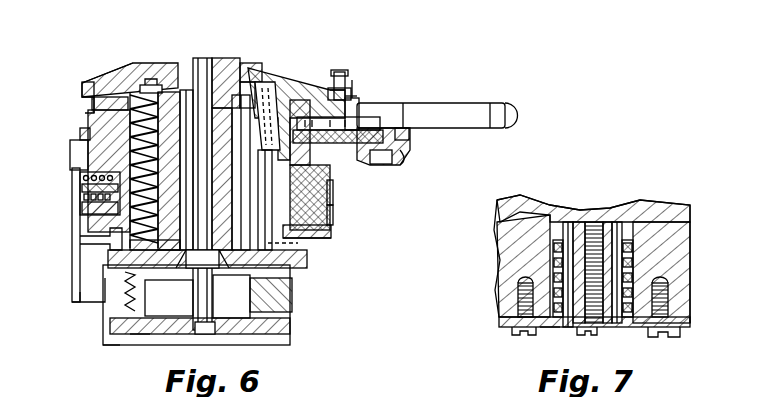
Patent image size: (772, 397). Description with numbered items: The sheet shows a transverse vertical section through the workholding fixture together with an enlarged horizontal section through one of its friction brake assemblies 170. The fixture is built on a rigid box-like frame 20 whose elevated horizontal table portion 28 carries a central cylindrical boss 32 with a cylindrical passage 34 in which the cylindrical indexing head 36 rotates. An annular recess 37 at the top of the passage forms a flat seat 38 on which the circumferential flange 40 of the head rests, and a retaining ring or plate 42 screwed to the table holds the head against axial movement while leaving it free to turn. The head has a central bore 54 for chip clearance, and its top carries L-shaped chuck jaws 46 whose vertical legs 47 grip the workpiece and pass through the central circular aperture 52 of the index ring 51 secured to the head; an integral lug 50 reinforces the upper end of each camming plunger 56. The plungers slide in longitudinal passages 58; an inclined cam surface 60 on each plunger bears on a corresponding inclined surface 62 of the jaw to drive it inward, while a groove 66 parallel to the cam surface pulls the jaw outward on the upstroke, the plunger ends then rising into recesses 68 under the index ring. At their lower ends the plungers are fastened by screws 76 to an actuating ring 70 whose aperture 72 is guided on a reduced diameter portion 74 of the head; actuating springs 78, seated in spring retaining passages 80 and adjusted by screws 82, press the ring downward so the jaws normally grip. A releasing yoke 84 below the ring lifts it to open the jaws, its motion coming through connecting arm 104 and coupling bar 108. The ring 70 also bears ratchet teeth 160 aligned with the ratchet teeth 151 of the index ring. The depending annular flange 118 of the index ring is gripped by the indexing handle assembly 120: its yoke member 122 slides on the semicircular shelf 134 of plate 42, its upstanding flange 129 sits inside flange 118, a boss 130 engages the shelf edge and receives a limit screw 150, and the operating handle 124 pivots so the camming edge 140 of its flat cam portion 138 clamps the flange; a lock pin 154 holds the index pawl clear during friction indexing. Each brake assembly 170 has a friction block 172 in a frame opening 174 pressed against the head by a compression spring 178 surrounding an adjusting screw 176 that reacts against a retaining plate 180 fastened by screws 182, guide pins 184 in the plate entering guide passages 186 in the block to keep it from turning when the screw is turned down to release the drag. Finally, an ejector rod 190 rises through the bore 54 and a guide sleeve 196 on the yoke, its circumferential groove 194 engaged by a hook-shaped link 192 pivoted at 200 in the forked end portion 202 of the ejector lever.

In FIG. 7, the frame 20 is at (494, 246).
In FIG. 6, the horizontal table portion 28 is at (334, 222).
In FIG. 6, the cylindrical boss 32 is at (332, 238).
In FIG. 6, the cylindrical passage 34 is at (333, 229).
In FIG. 6, the indexing head 36 is at (150, 68).
In FIG. 7, the indexing head 36 is at (626, 207).
In FIG. 6, the annular recess 37 is at (84, 132).
In FIG. 6, the seat 38 is at (80, 155).
In FIG. 6, the circumferential flange 40 is at (318, 158).
In FIG. 6, the retaining ring or plate 42 is at (88, 112).
In FIG. 6, the chuck jaws 46 is at (238, 95).
In FIG. 6, the vertical leg 47 is at (238, 60).
In FIG. 6, the lug 50 is at (300, 95).
In FIG. 6, the index ring 51 is at (100, 75).
In FIG. 6, the central circular aperture 52 is at (201, 58).
In FIG. 6, the central bore 54 is at (188, 132).
In FIG. 6, the camming plungers 56 is at (248, 155).
In FIG. 6, the passages 58 is at (334, 204).
In FIG. 6, the cam surface 60 is at (240, 127).
In FIG. 6, the inclined surface 62 is at (264, 82).
In FIG. 6, the groove 66 is at (336, 130).
In FIG. 6, the recesses 68 is at (290, 75).
In FIG. 6, the actuating ring 70 is at (308, 259).
In FIG. 6, the central aperture 72 is at (159, 294).
In FIG. 6, the reduced diameter portion 74 is at (231, 296).
In FIG. 6, the screw 76 is at (295, 243).
In FIG. 6, the actuating springs 78 is at (153, 170).
In FIG. 6, the spring retaining passage 80 is at (162, 240).
In FIG. 6, the adjusting screw 82 is at (144, 84).
In FIG. 6, the releasing yoke 84 is at (292, 296).
In FIG. 6, the connecting arm 104 is at (76, 240).
In FIG. 6, the horizontal coupling bar 108 is at (100, 305).
In FIG. 6, the depending annular flange 118 is at (90, 100).
In FIG. 6, the indexing handle assembly 120 is at (406, 96).
In FIG. 6, the yoke member 122 is at (408, 134).
In FIG. 6, the operating handle 124 is at (474, 104).
In FIG. 6, the upstanding flange 129 is at (334, 88).
In FIG. 6, the boss 130 is at (378, 165).
In FIG. 6, the semicircular shelf 134 is at (390, 160).
In FIG. 6, the flat cam portion 138 is at (356, 104).
In FIG. 6, the camming edge 140 is at (354, 96).
In FIG. 6, the screw 150 is at (408, 158).
In FIG. 6, the ratchet teeth 151 is at (82, 86).
In FIG. 6, the lock pin 154 is at (350, 92).
In FIG. 6, the ratchet teeth 160 is at (98, 246).
In FIG. 6, the friction brake assemblies 170 is at (80, 184).
In FIG. 7, the friction brake assemblies 170 is at (553, 338).
In FIG. 7, the friction block 172 is at (630, 257).
In FIG. 7, the opening 174 is at (553, 255).
In FIG. 7, the adjusting screw 176 is at (615, 326).
In FIG. 7, the compression spring 178 is at (655, 270).
In FIG. 7, the retaining plate 180 is at (690, 327).
In FIG. 7, the screws 182 is at (512, 333).
In FIG. 7, the guide pins 184 is at (553, 282).
In FIG. 7, the guide passages 186 is at (569, 225).
In FIG. 6, the ejector rod 190 is at (190, 116).
In FIG. 6, the hook-shaped link 192 is at (240, 318).
In FIG. 6, the circumferential groove 194 is at (192, 333).
In FIG. 6, the guide sleeve 196 is at (262, 168).
In FIG. 6, the pivot 200 is at (125, 346).
In FIG. 6, the forked end portion 202 is at (152, 335).